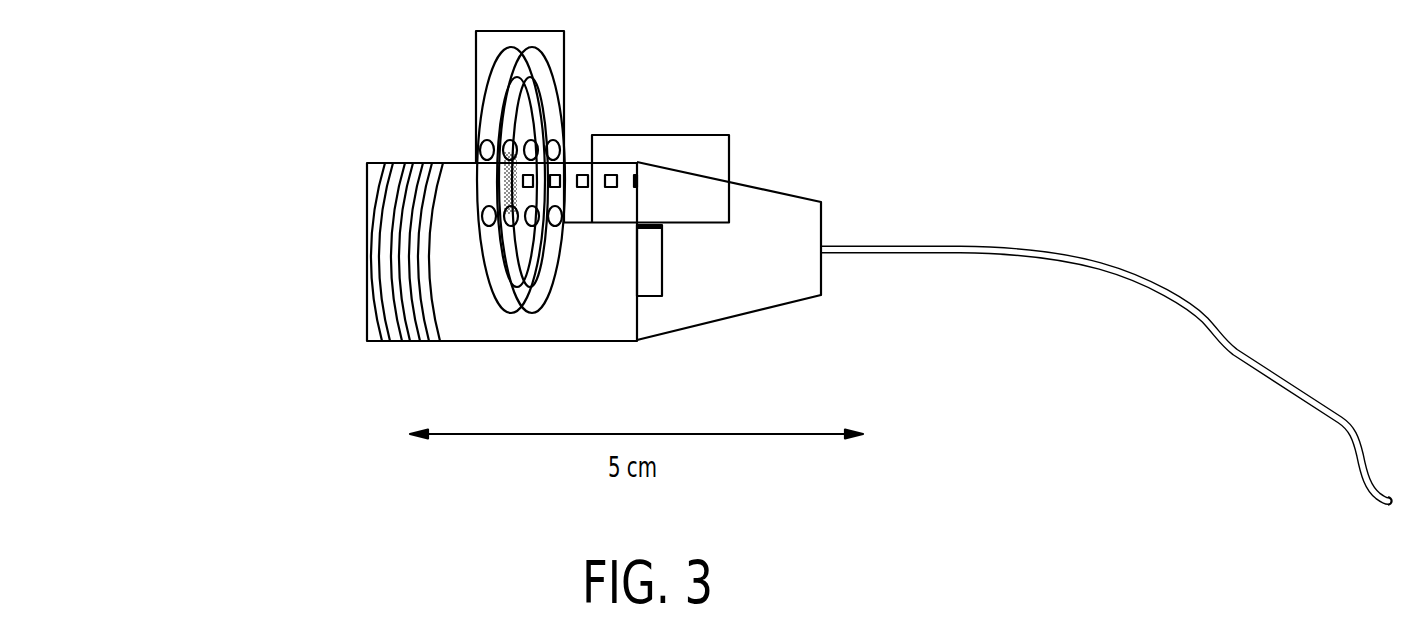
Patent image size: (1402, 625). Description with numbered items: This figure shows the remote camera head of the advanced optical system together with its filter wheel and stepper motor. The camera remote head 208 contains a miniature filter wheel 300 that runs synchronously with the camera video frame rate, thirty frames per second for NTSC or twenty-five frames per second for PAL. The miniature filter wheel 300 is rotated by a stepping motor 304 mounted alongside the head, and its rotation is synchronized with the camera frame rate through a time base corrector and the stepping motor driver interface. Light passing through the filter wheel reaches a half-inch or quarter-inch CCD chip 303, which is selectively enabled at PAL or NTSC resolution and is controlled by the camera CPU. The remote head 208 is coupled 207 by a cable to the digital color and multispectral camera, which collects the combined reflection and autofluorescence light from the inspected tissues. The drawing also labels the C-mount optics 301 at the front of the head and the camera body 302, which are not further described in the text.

The coupling 207 is at (1078, 253).
The camera remote head 208 is at (823, 220).
The miniature filter wheel 300 is at (476, 72).
The C-mount optics 301 is at (367, 277).
The camera body 302 is at (525, 343).
The CCD chip 303 is at (655, 298).
The stepping motor 304 is at (730, 143).